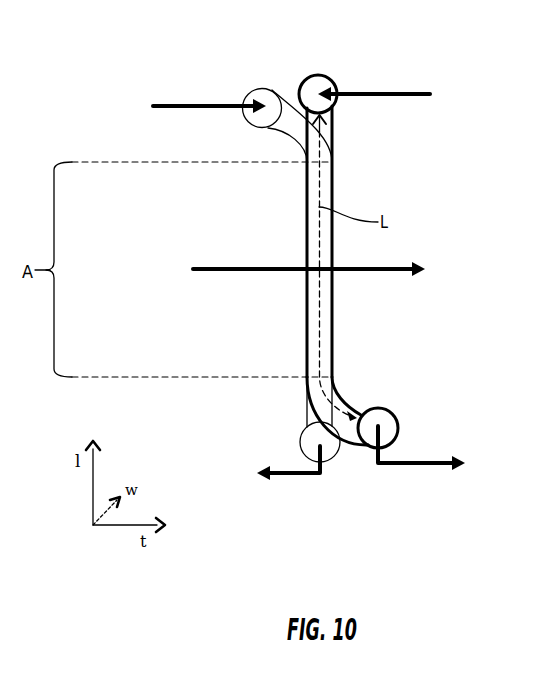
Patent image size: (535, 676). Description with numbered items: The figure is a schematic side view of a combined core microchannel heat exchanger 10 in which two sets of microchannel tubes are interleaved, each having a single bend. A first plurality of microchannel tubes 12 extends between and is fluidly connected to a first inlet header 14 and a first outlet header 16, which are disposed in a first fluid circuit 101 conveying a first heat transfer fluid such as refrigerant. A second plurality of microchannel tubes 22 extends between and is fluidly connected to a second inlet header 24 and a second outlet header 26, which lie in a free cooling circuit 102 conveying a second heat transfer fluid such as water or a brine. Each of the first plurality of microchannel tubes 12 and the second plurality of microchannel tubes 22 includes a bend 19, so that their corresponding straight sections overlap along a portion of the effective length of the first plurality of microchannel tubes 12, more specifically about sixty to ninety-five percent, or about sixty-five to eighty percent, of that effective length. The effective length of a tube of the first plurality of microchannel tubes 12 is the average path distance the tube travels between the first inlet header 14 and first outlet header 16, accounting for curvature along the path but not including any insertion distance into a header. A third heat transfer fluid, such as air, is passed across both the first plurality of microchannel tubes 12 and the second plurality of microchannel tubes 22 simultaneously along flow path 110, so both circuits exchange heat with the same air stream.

The combined core microchannel heat exchanger 10 is at (436, 46).
The first plurality of microchannel tubes 12 is at (332, 140).
The first inlet header 14 is at (331, 79).
The first outlet header 16 is at (397, 421).
The bend 19 is at (292, 135).
The second plurality of microchannel tubes 22 is at (270, 130).
The second inlet header 24 is at (244, 117).
The second outlet header 26 is at (334, 458).
The first fluid circuit 101 is at (400, 97).
The free cooling circuit 102 is at (183, 104).
The flow path 110 is at (227, 266).